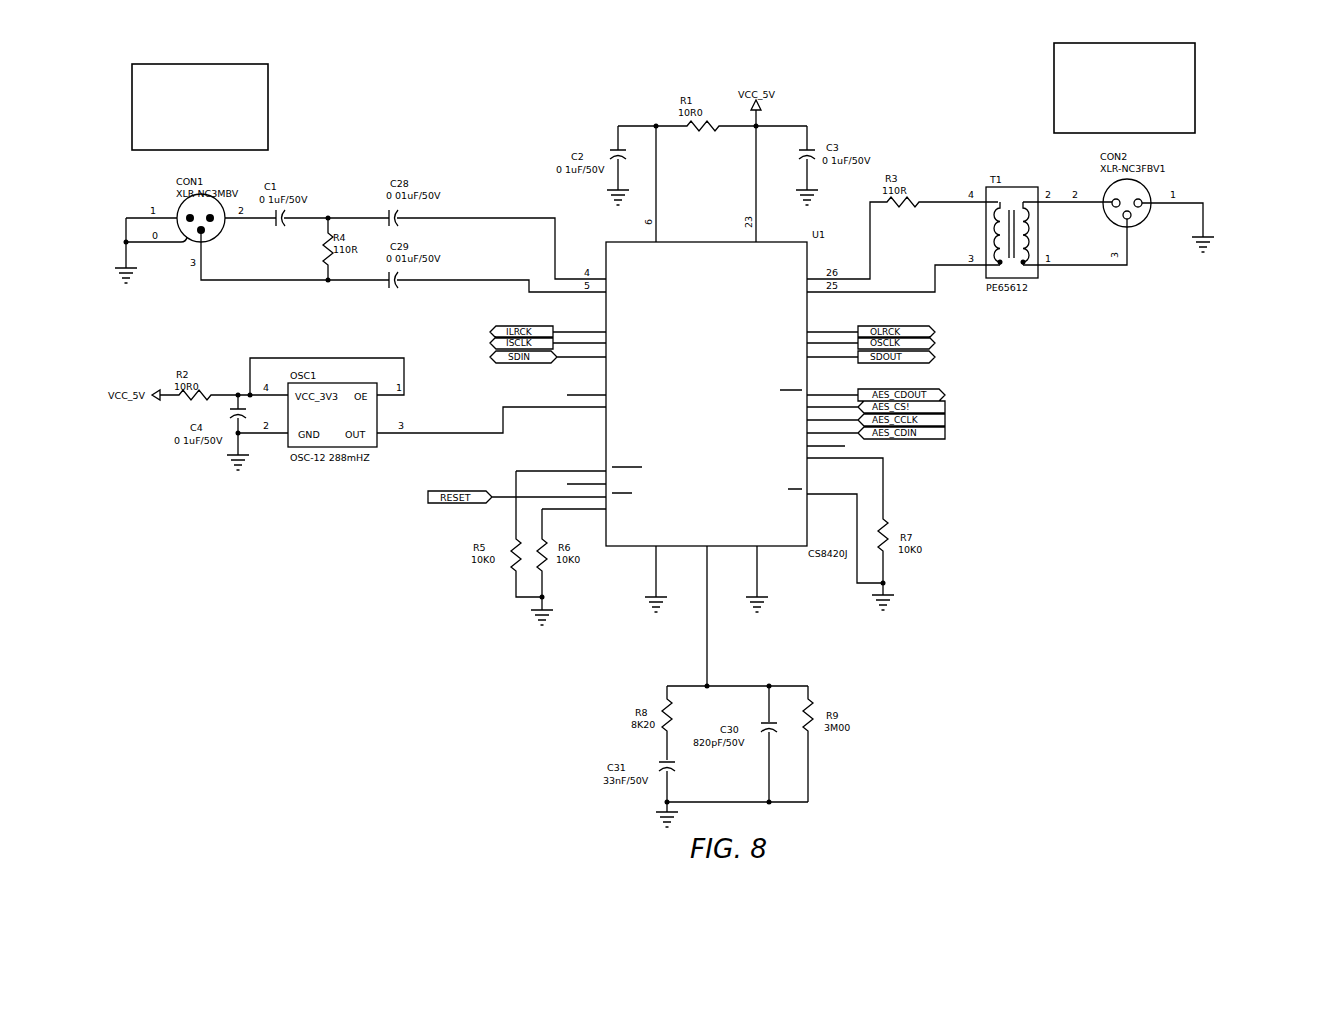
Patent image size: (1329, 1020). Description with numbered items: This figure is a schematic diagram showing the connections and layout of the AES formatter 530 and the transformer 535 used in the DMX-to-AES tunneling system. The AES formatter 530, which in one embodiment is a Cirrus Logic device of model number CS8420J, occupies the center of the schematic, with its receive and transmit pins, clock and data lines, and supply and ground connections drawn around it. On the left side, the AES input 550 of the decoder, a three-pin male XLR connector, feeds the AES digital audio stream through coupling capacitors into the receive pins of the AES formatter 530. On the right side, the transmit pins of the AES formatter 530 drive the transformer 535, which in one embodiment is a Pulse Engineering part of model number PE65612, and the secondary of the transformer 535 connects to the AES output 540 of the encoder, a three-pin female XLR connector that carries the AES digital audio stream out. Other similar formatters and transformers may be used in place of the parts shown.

The AES input 550 is at (268, 96).
The AES output 540 is at (1054, 83).
The transformer 535 is at (1038, 278).
The AES formatter 530 is at (787, 547).